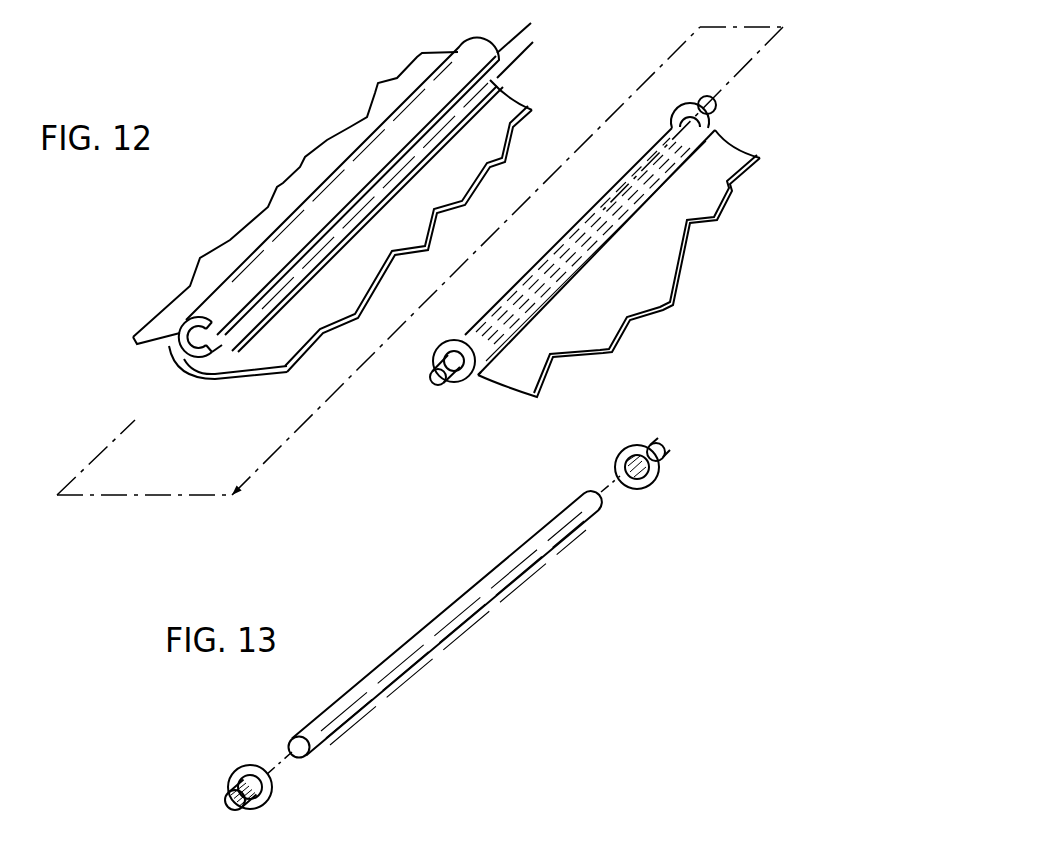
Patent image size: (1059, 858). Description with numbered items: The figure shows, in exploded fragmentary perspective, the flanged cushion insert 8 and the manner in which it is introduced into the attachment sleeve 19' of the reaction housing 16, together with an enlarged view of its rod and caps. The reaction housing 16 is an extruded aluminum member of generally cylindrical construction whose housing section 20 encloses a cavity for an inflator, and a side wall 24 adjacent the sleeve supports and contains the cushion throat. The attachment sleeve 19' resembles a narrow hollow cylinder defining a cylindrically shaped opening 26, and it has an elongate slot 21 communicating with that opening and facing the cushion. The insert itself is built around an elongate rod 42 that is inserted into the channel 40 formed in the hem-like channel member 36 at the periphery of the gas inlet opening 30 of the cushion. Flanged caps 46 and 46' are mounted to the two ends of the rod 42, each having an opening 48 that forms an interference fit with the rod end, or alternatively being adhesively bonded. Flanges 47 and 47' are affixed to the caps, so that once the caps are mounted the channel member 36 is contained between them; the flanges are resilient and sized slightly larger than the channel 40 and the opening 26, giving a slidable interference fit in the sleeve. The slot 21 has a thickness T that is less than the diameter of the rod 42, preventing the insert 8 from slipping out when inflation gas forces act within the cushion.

In FIG. 12, the flanged cushion insert 8 is at (665, 322).
In FIG. 12, the reaction housing 16 is at (190, 283).
In FIG. 12, the attachment sleeve 19' is at (127, 359).
In FIG. 12, the housing section 20 is at (283, 194).
In FIG. 12, the elongate slot 21 is at (204, 368).
In FIG. 12, the side wall 24 is at (246, 355).
In FIG. 12, the cylindrically shaped opening 26 is at (178, 370).
In FIG. 12, the gas inlet opening 30 is at (633, 240).
In FIG. 12, the channel member 36 is at (542, 258).
In FIG. 12, the channel 40 is at (474, 380).
In FIG. 13, the rod 42 is at (544, 537).
In FIG. 12, the flanged cap 46 is at (600, 256).
In FIG. 13, the flanged cap 46 is at (213, 787).
In FIG. 13, the flanged cap 46' is at (686, 443).
In FIG. 12, the flange 47 is at (454, 395).
In FIG. 13, the flange 47 is at (273, 795).
In FIG. 12, the flange 47' is at (729, 119).
In FIG. 13, the flange 47' is at (663, 495).
In FIG. 13, the opening 48 is at (646, 468).
In FIG. 12, the thickness T is at (515, 85).